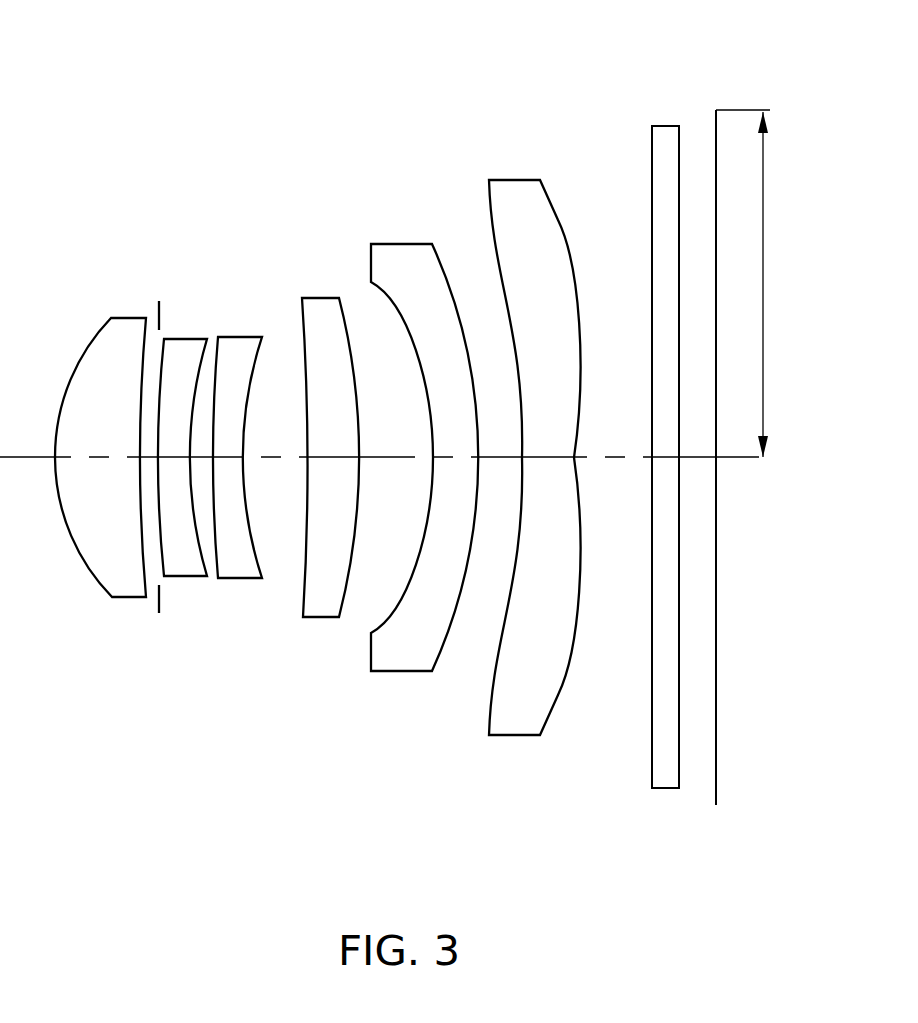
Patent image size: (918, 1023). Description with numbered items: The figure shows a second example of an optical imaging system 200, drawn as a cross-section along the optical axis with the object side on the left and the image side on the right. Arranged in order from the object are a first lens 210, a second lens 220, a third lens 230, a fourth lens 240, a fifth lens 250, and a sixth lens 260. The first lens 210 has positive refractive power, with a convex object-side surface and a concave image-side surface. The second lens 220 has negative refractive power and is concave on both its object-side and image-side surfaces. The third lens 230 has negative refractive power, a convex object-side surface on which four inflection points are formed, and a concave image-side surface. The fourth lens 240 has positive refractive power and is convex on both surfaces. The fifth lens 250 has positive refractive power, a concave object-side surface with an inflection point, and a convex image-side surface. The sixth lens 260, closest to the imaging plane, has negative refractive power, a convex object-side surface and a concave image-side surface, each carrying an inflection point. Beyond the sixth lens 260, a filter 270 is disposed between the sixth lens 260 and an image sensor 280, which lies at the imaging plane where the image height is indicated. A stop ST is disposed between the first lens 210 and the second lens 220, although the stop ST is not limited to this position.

The optical imaging system 200 is at (404, 126).
The first lens 210 is at (97, 583).
The second lens 220 is at (192, 578).
The third lens 230 is at (241, 580).
The fourth lens 240 is at (323, 620).
The fifth lens 250 is at (399, 673).
The sixth lens 260 is at (515, 737).
The filter 270 is at (667, 790).
The image sensor 280 is at (716, 766).
The stop ST is at (157, 311).